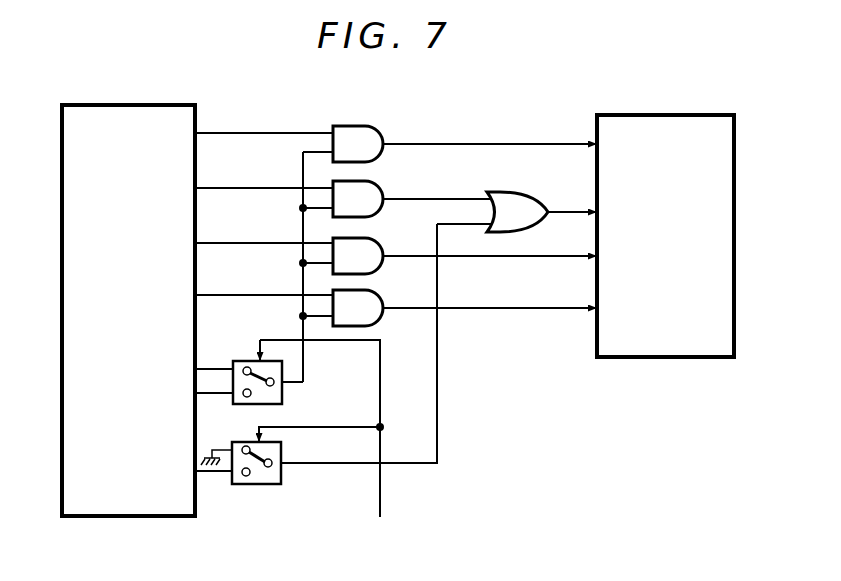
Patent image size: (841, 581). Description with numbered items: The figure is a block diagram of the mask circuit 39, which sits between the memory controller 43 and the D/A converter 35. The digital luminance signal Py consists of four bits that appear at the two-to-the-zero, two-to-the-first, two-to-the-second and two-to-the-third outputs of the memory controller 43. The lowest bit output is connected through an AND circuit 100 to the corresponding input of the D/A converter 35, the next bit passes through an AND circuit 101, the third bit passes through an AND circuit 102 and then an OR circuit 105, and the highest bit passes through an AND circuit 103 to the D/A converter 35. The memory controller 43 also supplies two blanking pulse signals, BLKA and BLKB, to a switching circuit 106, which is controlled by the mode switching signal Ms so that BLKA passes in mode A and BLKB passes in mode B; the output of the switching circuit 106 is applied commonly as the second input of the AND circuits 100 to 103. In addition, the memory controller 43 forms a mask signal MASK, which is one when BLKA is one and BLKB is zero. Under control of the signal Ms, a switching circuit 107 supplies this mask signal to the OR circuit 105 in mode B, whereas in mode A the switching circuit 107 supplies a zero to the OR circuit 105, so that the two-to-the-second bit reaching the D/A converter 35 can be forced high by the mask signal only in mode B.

The memory controller 43 is at (163, 518).
The D/A converter 35 is at (687, 358).
The mask circuit 39 is at (486, 370).
The AND circuit 100 is at (377, 295).
The AND circuit 101 is at (377, 240).
The AND circuit 102 is at (383, 184).
The AND circuit 103 is at (385, 133).
The OR circuit 105 is at (563, 190).
The switching circuit 106 is at (284, 396).
The switching circuit 107 is at (275, 486).